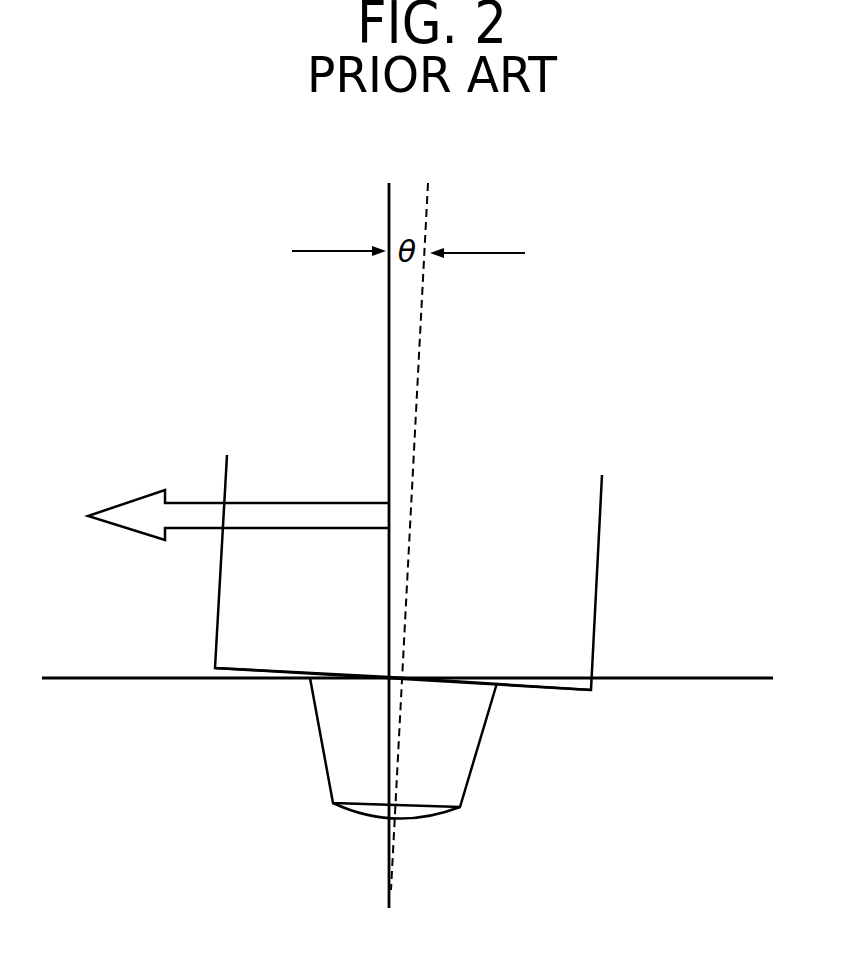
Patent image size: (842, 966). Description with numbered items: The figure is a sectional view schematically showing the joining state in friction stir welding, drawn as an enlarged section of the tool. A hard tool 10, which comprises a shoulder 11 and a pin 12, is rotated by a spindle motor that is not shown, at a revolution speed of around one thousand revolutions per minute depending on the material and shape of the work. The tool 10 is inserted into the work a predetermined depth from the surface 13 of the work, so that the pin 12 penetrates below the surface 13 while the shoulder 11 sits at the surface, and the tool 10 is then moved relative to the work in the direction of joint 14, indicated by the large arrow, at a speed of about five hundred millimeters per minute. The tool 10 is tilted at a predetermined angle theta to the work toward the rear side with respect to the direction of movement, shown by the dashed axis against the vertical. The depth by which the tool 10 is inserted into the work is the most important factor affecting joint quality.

The tool 10 is at (508, 515).
The shoulder 11 is at (550, 677).
The pin 12 is at (412, 745).
The surface of the work 13 is at (128, 680).
The direction of joint 14 is at (305, 517).